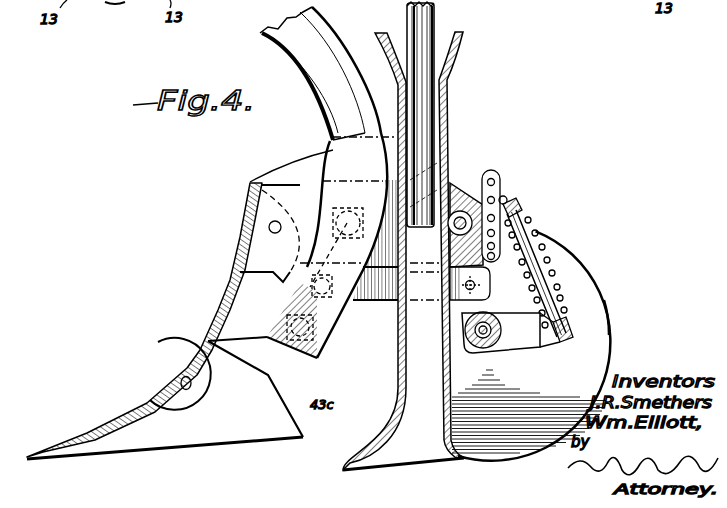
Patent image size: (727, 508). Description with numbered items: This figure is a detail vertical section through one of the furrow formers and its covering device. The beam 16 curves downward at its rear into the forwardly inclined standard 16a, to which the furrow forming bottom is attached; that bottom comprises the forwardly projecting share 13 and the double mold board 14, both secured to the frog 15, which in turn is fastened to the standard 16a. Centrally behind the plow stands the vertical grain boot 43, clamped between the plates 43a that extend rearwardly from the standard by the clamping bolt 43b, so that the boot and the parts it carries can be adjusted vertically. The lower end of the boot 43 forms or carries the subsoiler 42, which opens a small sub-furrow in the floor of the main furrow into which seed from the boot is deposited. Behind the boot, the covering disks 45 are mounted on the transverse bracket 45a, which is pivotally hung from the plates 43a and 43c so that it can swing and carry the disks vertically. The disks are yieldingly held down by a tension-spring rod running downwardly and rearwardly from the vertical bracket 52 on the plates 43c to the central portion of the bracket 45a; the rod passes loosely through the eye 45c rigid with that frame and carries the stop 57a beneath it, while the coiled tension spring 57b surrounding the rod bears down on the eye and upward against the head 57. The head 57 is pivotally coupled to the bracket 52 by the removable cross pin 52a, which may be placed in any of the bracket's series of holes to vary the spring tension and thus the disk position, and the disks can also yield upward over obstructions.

The share 13 is at (44, 452).
The double mold board 14 is at (227, 278).
The frog 15 is at (220, 307).
The beam 16 is at (287, 58).
The standard 16a is at (333, 163).
The subsoiler 42 is at (350, 462).
The grain boot 43 is at (460, 2).
The clamping plates 43a is at (348, 310).
The clamping bolt 43b is at (491, 295).
The plates 43c is at (458, 183).
The covering disks 45 is at (583, 270).
The covering disk bracket 45a is at (537, 343).
The eye 45c is at (574, 316).
The vertical bracket 52 is at (500, 186).
The cross pin 52a is at (507, 200).
The head 57 is at (520, 203).
The stop 57a is at (568, 334).
The coiled tension spring 57b is at (537, 228).